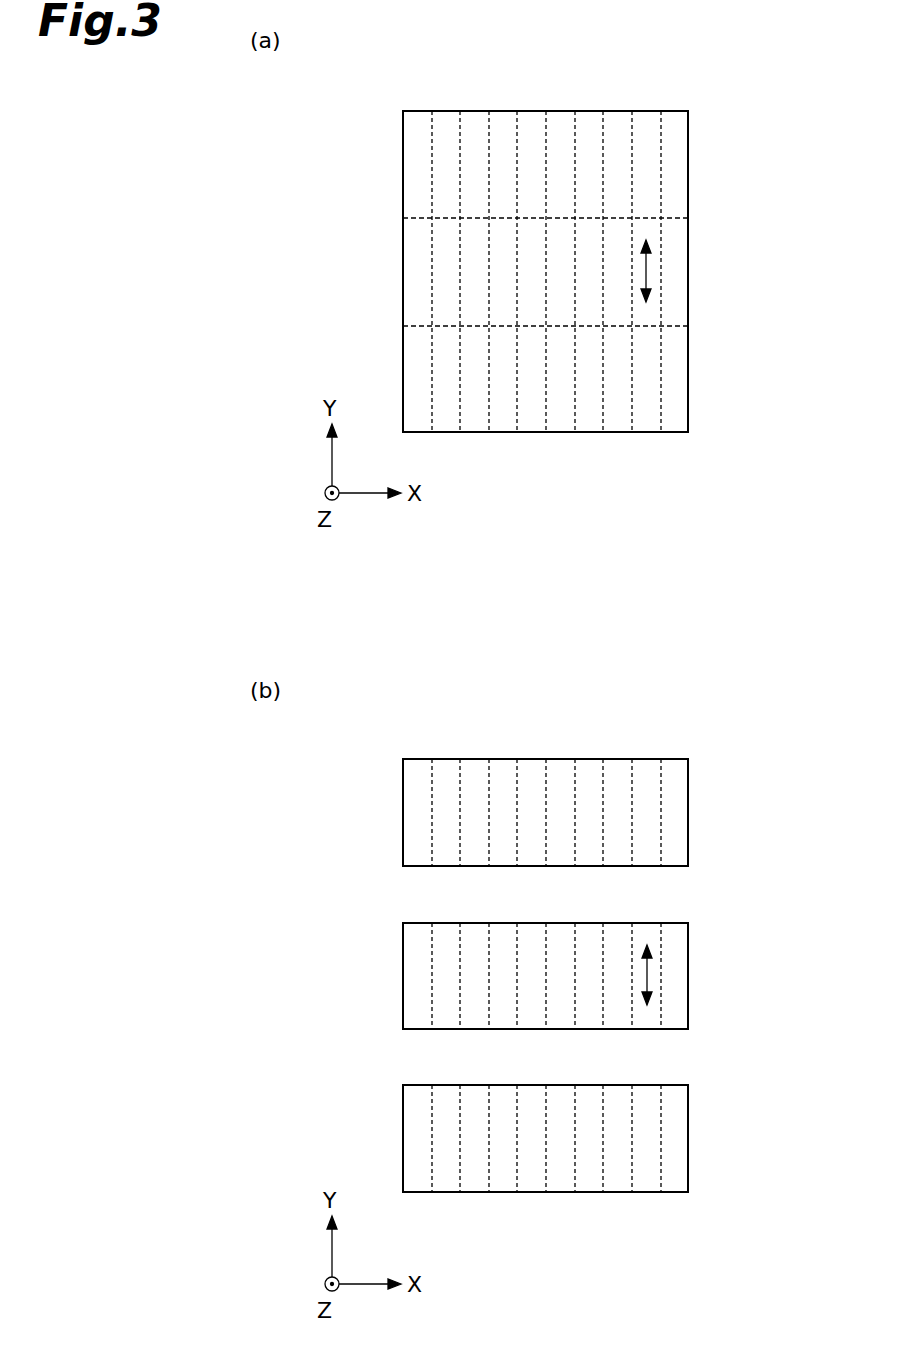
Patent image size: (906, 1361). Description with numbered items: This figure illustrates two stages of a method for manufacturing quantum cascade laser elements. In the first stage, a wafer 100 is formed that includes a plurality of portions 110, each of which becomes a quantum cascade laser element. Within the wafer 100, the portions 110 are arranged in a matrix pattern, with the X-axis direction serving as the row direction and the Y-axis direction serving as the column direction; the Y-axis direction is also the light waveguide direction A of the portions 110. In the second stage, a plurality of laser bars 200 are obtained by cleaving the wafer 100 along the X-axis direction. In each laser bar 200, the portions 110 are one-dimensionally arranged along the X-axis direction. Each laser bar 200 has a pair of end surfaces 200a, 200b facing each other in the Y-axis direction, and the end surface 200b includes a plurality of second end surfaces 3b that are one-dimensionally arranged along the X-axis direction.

The wafer 100 is at (689, 238).
The portions 110 is at (559, 124).
The laser bars 200 is at (689, 813).
The end surface 200a is at (445, 1029).
The end surface 200b is at (445, 923).
The second end surfaces 3b is at (647, 923).
The light waveguide direction A is at (646, 272).